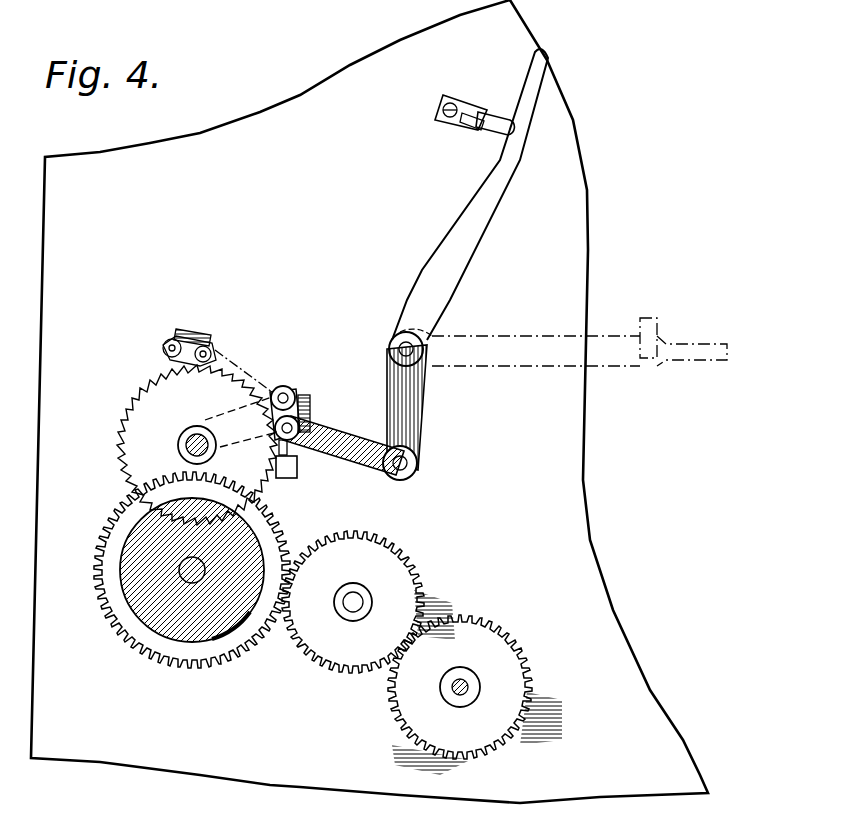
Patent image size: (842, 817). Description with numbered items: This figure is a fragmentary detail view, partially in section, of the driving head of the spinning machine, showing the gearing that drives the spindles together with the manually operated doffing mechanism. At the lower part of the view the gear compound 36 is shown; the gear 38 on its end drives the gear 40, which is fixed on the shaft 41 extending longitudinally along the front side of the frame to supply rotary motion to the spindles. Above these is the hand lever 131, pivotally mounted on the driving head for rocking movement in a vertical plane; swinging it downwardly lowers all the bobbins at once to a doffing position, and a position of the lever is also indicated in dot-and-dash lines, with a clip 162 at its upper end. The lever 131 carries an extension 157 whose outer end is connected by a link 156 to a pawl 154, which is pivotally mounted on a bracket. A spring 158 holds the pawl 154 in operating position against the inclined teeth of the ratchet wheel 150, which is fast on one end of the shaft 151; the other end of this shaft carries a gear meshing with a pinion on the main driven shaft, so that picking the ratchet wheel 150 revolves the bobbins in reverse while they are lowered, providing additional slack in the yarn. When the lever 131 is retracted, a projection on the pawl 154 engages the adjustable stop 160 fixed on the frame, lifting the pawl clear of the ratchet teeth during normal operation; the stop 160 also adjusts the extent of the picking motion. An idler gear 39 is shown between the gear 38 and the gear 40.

The hand lever 131 is at (538, 73).
The clip 162 is at (494, 115).
The extension 157 is at (424, 409).
The link 156 is at (343, 440).
The spring 158 is at (432, 332).
The adjustable stop 160 is at (293, 470).
The pawl 154 is at (165, 364).
The ratchet wheel 150 is at (138, 413).
The shaft 151 is at (190, 449).
The gear 38 is at (131, 627).
The gear compound 36 is at (182, 640).
The gear 39 is at (417, 563).
The gear 40 is at (492, 630).
The shaft 41 is at (464, 689).